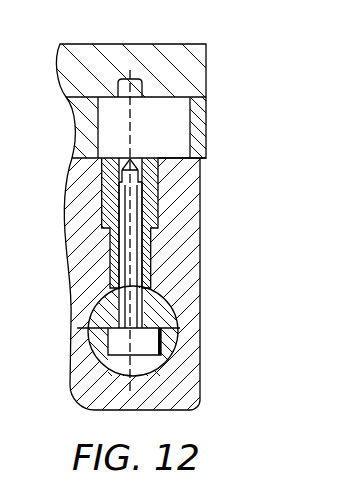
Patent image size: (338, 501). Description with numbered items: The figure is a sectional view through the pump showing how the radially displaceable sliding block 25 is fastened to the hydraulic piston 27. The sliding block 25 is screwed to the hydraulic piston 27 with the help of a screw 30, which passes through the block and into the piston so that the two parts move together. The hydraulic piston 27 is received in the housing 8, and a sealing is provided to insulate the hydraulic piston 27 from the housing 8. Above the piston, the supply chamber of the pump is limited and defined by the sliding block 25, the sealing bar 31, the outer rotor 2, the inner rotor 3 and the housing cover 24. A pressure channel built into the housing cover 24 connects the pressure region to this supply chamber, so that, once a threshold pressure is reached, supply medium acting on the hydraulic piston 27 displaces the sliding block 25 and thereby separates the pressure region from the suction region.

The outer rotor 2 is at (207, 128).
The inner rotor 3 is at (78, 117).
The housing 8 is at (200, 198).
The housing cover 24 is at (62, 70).
The sliding block 25 is at (97, 183).
The hydraulic piston 27 is at (107, 312).
The screw 30 is at (130, 260).
The sealing bar 31 is at (168, 158).